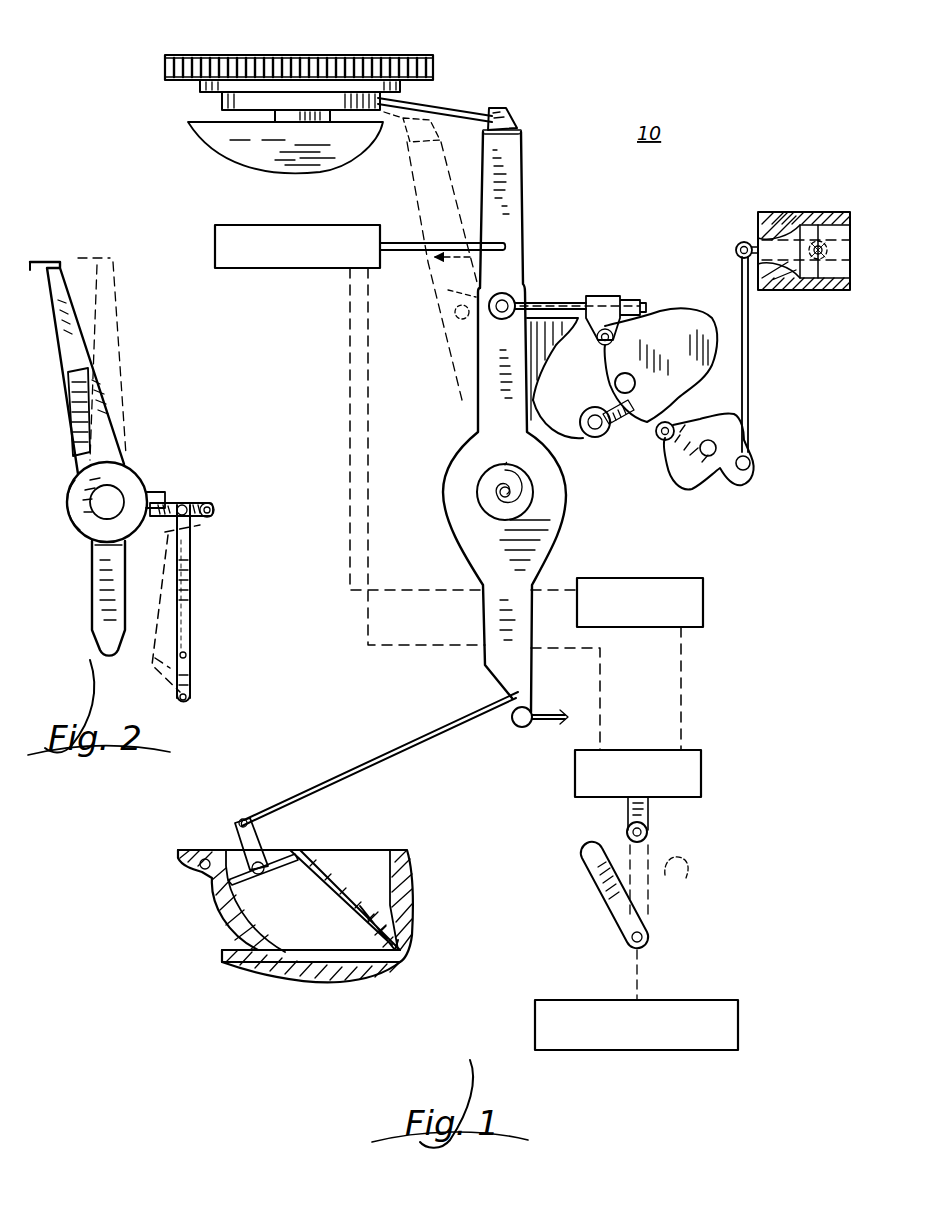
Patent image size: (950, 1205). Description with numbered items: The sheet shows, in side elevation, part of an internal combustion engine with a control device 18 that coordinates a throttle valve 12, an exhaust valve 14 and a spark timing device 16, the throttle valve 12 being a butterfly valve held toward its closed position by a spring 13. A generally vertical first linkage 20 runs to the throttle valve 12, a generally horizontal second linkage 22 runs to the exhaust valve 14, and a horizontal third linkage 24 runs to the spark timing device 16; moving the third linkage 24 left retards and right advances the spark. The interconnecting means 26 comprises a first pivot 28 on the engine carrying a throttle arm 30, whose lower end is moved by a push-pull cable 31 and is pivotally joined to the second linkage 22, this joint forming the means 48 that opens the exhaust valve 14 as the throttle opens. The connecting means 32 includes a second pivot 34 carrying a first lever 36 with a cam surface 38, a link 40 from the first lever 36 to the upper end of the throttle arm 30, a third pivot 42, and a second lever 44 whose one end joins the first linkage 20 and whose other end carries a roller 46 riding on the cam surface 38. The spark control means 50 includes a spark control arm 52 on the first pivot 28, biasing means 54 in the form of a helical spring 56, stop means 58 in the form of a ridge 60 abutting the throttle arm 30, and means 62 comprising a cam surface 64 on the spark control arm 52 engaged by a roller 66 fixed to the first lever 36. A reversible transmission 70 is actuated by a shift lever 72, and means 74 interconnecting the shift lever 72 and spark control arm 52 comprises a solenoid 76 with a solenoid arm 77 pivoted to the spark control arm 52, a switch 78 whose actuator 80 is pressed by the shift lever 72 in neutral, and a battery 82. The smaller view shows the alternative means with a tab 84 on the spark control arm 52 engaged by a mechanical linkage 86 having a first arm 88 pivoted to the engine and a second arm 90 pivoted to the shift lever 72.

In FIG. 1, the throttle valve 12 is at (812, 212).
In FIG. 1, the spring 13 is at (851, 254).
In FIG. 1, the exhaust valve 14 is at (345, 852).
In FIG. 1, the spark timing device 16 is at (336, 54).
In FIG. 1, the control device 18 is at (408, 535).
In FIG. 1, the first linkage 20 is at (750, 345).
In FIG. 1, the second linkage 22 is at (442, 730).
In FIG. 1, the third linkage 24 is at (457, 108).
In FIG. 1, the means interconnecting the first, second and third linkages 26 is at (415, 437).
In FIG. 1, the first pivot 28 is at (500, 490).
In FIG. 1, the throttle arm 30 is at (485, 360).
In FIG. 1, the push-pull cable 31 is at (552, 715).
In FIG. 1, the means operatively connecting the throttle arm to the first linkage 32 is at (625, 275).
In FIG. 1, the second pivot 34 is at (627, 382).
In FIG. 1, the first lever 36 is at (695, 297).
In FIG. 1, the cam surface 38 is at (658, 438).
In FIG. 1, the link 40 is at (582, 300).
In FIG. 1, the third pivot 42 is at (716, 446).
In FIG. 1, the second lever 44 is at (712, 471).
In FIG. 1, the roller 46 is at (676, 424).
In FIG. 1, the means for opening the exhaust valve 48 is at (502, 730).
In FIG. 1, the means for controlling the spark timing 50 is at (502, 391).
In FIG. 1, the spark control arm 52 is at (508, 155).
In FIG. 2, the spark control arm 52 is at (130, 360).
In FIG. 1, the means biasing the spark control arm 54 is at (478, 505).
In FIG. 1, the helical spring 56 is at (528, 503).
In FIG. 1, the means for preventing rotation of the spark control arm beyond the throttle arm 58 is at (405, 330).
In FIG. 1, the ridge 60 is at (455, 296).
In FIG. 1, the means rotating the spark control arm counterclockwise 62 is at (607, 442).
In FIG. 1, the cam surface 64 is at (550, 348).
In FIG. 1, the roller 66 is at (588, 416).
In FIG. 1, the reversible transmission 70 is at (705, 1008).
In FIG. 1, the shift lever 72 is at (630, 900).
In FIG. 2, the shift lever 72 is at (192, 678).
In FIG. 1, the means interconnecting the shift lever and the spark control arm 74 is at (345, 290).
In FIG. 2, the means interconnecting the shift lever and the spark control arm 74 is at (192, 576).
In FIG. 1, the solenoid 76 is at (298, 225).
In FIG. 1, the solenoid arm 77 is at (400, 243).
In FIG. 1, the switch 78 is at (702, 778).
In FIG. 1, the actuator 80 is at (650, 832).
In FIG. 1, the battery 82 is at (648, 578).
In FIG. 2, the tab 84 is at (160, 492).
In FIG. 2, the mechanical linkage 86 is at (193, 597).
In FIG. 2, the first arm 88 is at (168, 505).
In FIG. 2, the second arm 90 is at (188, 549).